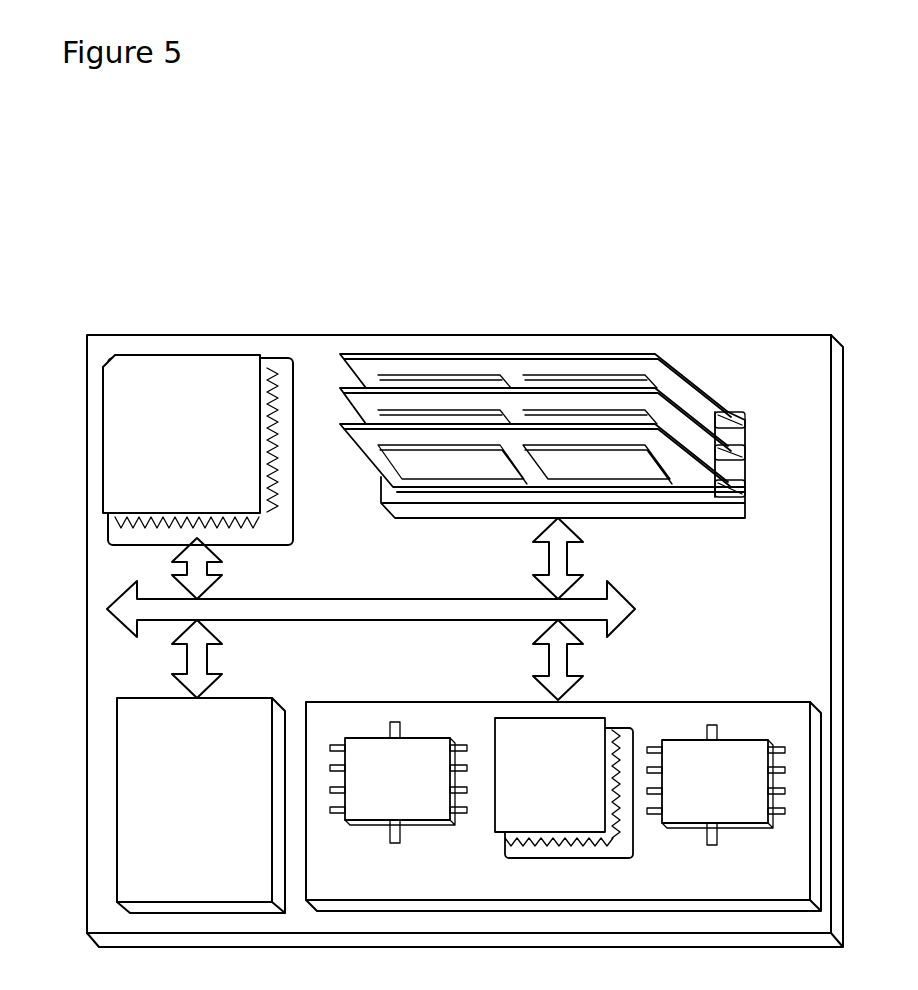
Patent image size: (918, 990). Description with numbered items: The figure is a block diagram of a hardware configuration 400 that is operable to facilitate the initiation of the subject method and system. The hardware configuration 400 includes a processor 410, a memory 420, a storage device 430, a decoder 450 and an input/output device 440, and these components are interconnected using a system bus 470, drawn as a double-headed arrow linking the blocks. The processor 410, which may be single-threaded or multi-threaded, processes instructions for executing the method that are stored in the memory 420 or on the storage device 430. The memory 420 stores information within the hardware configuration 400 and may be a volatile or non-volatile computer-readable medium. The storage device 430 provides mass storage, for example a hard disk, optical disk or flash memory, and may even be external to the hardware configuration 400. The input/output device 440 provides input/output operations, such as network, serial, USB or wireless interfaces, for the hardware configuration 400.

The hardware configuration 400 is at (331, 214).
The processor 410 is at (214, 487).
The memory 420 is at (718, 410).
The storage device 430 is at (214, 877).
The input/output device 440 is at (760, 702).
The decoder 450 is at (293, 531).
The system bus 470 is at (373, 622).